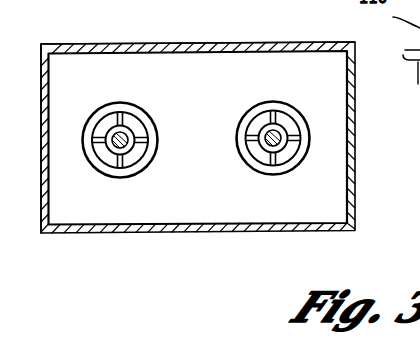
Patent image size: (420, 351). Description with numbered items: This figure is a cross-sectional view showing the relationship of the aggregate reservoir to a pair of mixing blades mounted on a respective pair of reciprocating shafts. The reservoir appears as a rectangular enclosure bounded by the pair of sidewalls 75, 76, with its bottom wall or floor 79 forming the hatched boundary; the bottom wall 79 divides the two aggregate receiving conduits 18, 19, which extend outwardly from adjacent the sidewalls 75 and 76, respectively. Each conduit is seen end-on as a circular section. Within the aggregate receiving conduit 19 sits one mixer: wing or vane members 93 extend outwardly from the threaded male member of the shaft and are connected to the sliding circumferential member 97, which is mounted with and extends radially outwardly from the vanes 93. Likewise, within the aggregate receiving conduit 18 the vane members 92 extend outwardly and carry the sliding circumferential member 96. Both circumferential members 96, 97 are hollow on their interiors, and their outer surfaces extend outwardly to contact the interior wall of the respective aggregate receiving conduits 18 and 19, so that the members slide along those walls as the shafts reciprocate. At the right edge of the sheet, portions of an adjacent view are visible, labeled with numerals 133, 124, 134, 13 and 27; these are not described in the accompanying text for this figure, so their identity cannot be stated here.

The aggregate receiving conduit 18 is at (262, 139).
The aggregate receiving conduit 19 is at (139, 132).
The sidewall 75 is at (41, 68).
The sidewall 76 is at (355, 187).
The bottom wall 79 is at (200, 44).
The vane member 92 is at (272, 110).
The vane member 93 is at (124, 113).
The sliding circumferential member 96 is at (238, 147).
The sliding circumferential member 97 is at (148, 128).
The member of adjacent figure 133 is at (393, 20).
The bracket of adjacent figure 124 is at (410, 48).
The member of adjacent figure 134 is at (419, 104).
The member of adjacent figure 13 is at (411, 132).
The member of adjacent figure 27 is at (410, 148).